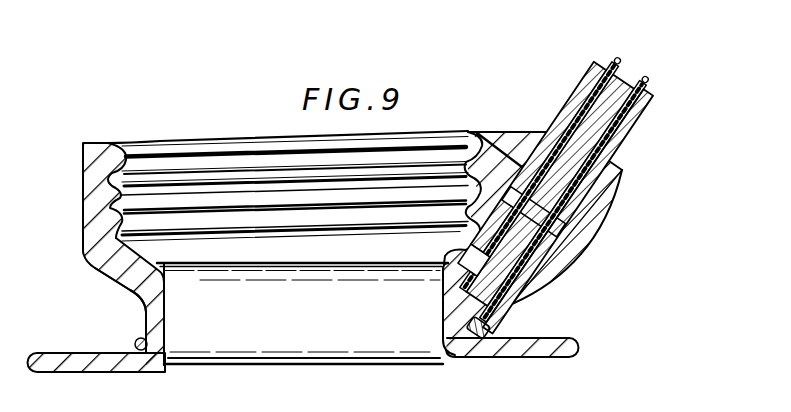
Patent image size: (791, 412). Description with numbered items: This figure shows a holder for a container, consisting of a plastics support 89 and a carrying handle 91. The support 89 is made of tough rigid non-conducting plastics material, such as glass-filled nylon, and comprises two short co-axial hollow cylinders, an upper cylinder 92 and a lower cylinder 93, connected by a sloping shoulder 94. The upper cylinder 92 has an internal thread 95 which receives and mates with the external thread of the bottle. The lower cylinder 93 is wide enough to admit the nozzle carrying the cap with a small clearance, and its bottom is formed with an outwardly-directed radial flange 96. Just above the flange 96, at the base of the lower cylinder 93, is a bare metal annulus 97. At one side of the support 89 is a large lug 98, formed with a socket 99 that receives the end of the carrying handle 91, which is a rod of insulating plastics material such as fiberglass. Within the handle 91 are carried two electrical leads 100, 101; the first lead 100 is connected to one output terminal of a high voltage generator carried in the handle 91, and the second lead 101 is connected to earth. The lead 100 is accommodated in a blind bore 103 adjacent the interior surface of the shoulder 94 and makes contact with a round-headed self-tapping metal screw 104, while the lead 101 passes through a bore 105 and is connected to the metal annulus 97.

The plastics support 89 is at (268, 137).
The carrying handle 91 is at (580, 84).
The upper cylinder 92 is at (83, 208).
The lower cylinder 93 is at (147, 310).
The sloping shoulder 94 is at (150, 252).
The internal thread 95 is at (143, 143).
The outwardly-directed radial flange 96 is at (40, 353).
The bare metal annulus 97 is at (135, 340).
The lug 98 is at (572, 248).
The socket 99 is at (467, 132).
The electrical lead 100 is at (567, 117).
The electrical lead 101 is at (630, 152).
The blind bore 103 is at (447, 287).
The round-headed self-tapping metal screw 104 is at (450, 248).
The bore 105 is at (520, 294).